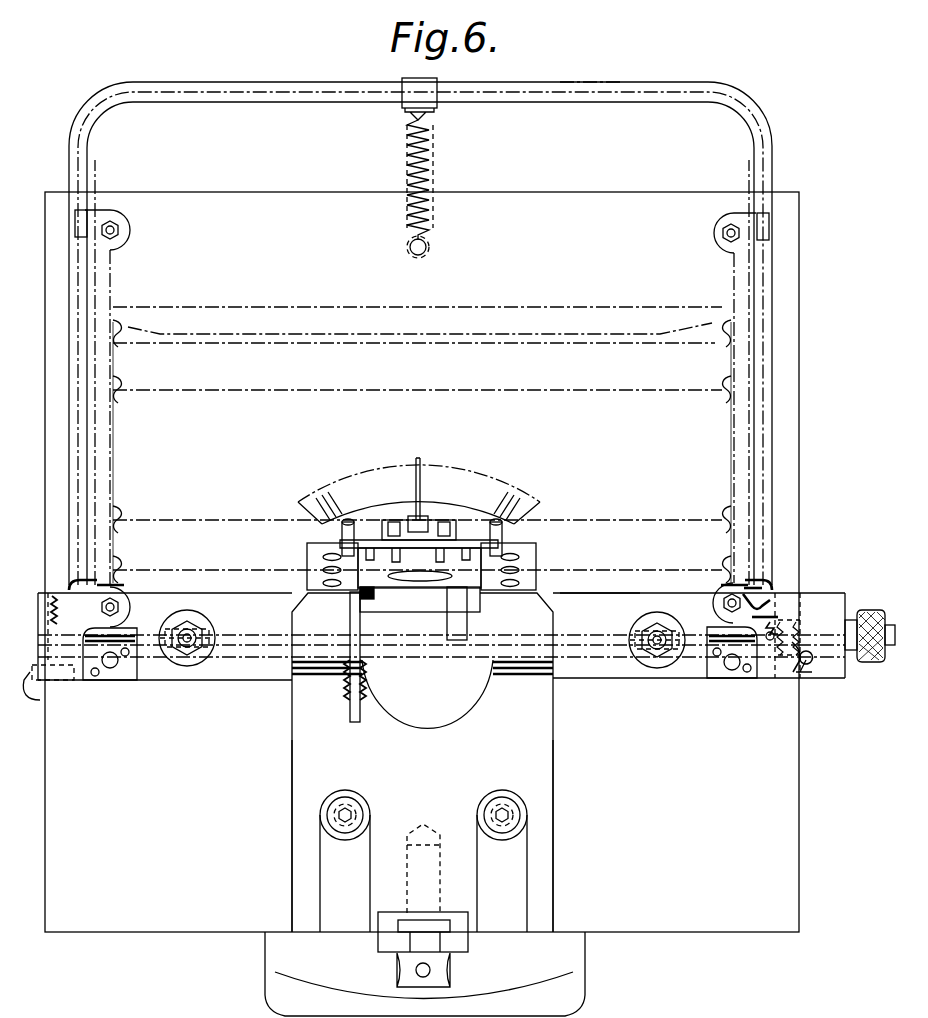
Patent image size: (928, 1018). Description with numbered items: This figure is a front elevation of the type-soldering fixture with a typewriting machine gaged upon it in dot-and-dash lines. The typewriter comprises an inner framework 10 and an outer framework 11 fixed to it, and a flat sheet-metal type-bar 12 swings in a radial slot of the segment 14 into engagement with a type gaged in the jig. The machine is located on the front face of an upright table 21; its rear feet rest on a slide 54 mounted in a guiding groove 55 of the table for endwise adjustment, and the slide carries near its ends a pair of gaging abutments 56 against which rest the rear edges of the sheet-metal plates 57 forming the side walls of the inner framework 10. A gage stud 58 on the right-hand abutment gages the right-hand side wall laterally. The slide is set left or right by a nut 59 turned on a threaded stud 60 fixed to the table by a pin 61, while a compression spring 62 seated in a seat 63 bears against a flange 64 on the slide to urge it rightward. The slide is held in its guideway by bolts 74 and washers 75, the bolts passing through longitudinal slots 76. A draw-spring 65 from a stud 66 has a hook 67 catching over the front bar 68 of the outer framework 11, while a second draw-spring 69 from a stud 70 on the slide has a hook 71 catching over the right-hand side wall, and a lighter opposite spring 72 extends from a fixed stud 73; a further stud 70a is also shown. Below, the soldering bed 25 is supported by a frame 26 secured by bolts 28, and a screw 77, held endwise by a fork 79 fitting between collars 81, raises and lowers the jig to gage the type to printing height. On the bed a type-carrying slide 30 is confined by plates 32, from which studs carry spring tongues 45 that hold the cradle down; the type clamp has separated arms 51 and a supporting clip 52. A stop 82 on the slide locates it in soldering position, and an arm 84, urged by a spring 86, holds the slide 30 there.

The inner framework 10 is at (120, 246).
The outer framework 11 is at (756, 105).
The type-bar 12 is at (421, 460).
The segment 14 is at (338, 488).
The table 21 is at (270, 192).
The bed 25 is at (441, 762).
The frame 26 is at (553, 765).
The bolts 28 is at (356, 809).
The type-carrying slide 30 is at (420, 599).
The plates 32 is at (308, 552).
The spring tongues 45 is at (350, 526).
The arms 51 is at (396, 520).
The clip 52 is at (450, 518).
The slide 54 is at (600, 607).
The guiding groove 55 is at (612, 593).
The gaging abutments 56 is at (127, 632).
The plates 57 is at (100, 486).
The gage stud 58 is at (790, 610).
The nut 59 is at (872, 662).
The threaded stud 60 is at (890, 625).
The pin 61 is at (772, 642).
The compression spring 62 is at (818, 612).
The seat 63 is at (790, 660).
The flange 64 is at (820, 670).
The draw-spring 65 is at (433, 150).
The stud 66 is at (430, 248).
The hook 67 is at (437, 100).
The front bar 68 is at (578, 86).
The draw-spring 69 is at (772, 596).
The stud 70 is at (122, 228).
The nut 70a is at (806, 680).
The hook 71 is at (748, 586).
The spring 72 is at (58, 626).
The fixed stud 73 is at (44, 702).
The bolts 74 is at (200, 628).
The washers 75 is at (178, 668).
The longitudinal slots 76 is at (206, 630).
The screw 77 is at (412, 884).
The fork 79 is at (380, 950).
The collars 81 is at (440, 922).
The stop 82 is at (447, 628).
The arm 84 is at (350, 716).
The spring 86 is at (368, 680).